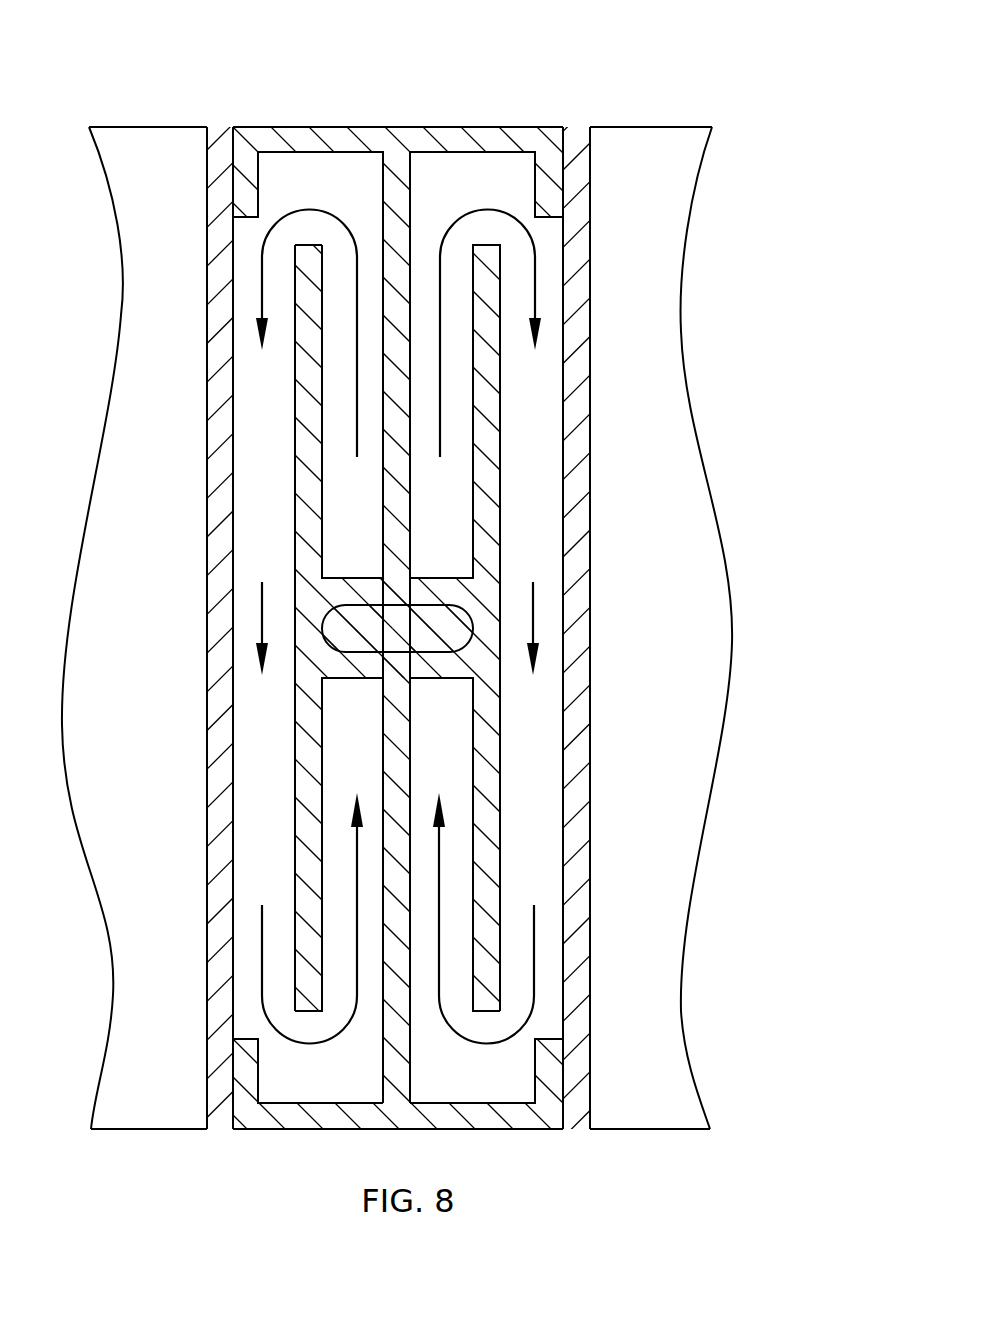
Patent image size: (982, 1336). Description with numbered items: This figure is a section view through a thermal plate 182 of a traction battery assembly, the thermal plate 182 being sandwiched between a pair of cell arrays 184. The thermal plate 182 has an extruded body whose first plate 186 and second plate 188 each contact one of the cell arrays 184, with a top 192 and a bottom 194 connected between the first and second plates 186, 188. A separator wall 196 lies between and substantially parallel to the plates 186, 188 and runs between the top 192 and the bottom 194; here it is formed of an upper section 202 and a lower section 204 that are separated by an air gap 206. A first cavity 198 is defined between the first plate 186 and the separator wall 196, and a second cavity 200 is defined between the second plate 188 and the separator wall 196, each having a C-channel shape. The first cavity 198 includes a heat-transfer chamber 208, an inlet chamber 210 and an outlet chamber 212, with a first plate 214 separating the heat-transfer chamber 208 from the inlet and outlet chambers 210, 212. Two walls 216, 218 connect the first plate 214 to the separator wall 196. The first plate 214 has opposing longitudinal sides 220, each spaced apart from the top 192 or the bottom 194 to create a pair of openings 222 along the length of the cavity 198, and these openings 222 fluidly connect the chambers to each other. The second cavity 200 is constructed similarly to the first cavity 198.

The thermal plate 182 is at (670, 57).
The cell arrays 184 is at (106, 664).
The first plate 186 is at (222, 428).
The second plate 188 is at (580, 247).
The top 192 is at (405, 138).
The bottom 194 is at (448, 1115).
The separator wall 196 is at (397, 320).
The first cavity 198 is at (338, 186).
The second cavity 200 is at (419, 186).
The upper section 202 is at (397, 540).
The lower section 204 is at (402, 768).
The air gap 206 is at (378, 644).
The heat-transfer chamber 208 is at (246, 394).
The inlet chamber 210 is at (336, 494).
The outlet chamber 212 is at (333, 766).
The first plate 214 is at (308, 788).
The wall 216 is at (370, 592).
The wall 218 is at (370, 668).
The longitudinal sides 220 is at (308, 245).
The openings 222 is at (284, 182).